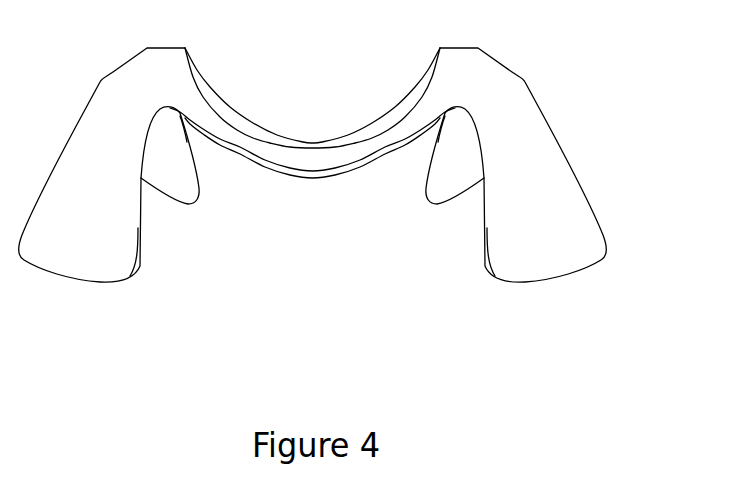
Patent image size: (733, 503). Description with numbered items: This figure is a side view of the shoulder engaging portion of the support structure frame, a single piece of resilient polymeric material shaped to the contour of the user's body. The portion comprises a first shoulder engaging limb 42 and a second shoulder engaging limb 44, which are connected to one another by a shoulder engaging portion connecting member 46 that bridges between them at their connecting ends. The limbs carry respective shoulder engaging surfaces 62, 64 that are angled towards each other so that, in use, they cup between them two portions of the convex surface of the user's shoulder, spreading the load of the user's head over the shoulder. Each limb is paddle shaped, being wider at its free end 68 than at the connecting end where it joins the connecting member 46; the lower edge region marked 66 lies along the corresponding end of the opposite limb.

The first shoulder engaging limb 42 is at (573, 228).
The second shoulder engaging limb 44 is at (130, 233).
The shoulder engaging portion connecting member 46 is at (328, 160).
The shoulder engaging surface 62 is at (548, 194).
The shoulder engaging surface 64 is at (104, 206).
The right bottom edge 66 is at (543, 283).
The free end 68 is at (107, 283).